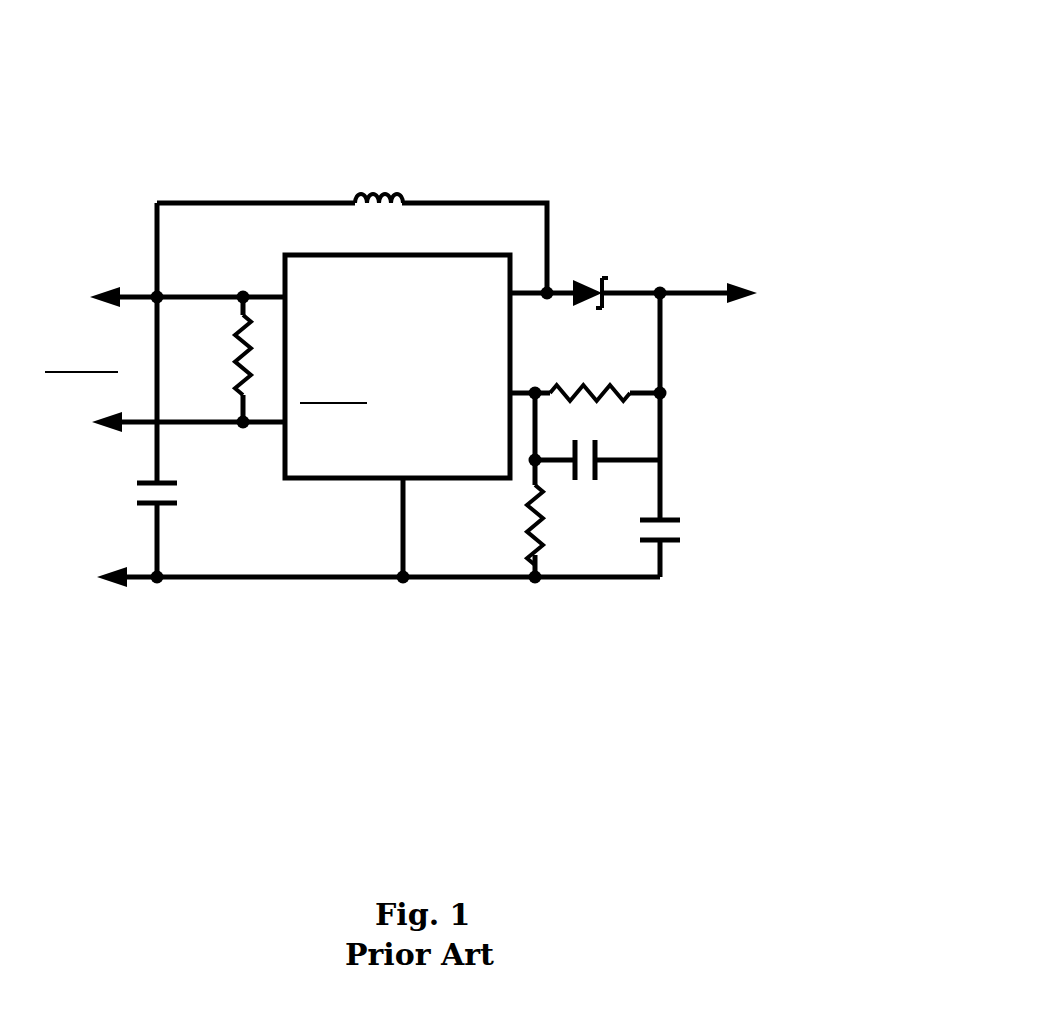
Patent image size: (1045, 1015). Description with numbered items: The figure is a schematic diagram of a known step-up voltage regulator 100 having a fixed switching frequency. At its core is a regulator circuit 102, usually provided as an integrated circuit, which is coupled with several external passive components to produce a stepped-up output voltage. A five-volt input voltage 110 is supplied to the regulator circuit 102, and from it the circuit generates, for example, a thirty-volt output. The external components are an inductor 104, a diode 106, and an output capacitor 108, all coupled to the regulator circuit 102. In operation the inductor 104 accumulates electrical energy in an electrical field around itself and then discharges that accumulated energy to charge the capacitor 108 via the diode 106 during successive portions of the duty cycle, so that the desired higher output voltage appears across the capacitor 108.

The step-up voltage regulator 100 is at (460, 300).
The regulator circuit 102 is at (287, 250).
The inductor 104 is at (380, 168).
The diode 106 is at (572, 280).
The capacitor 108 is at (740, 508).
The input voltage 110 is at (107, 235).